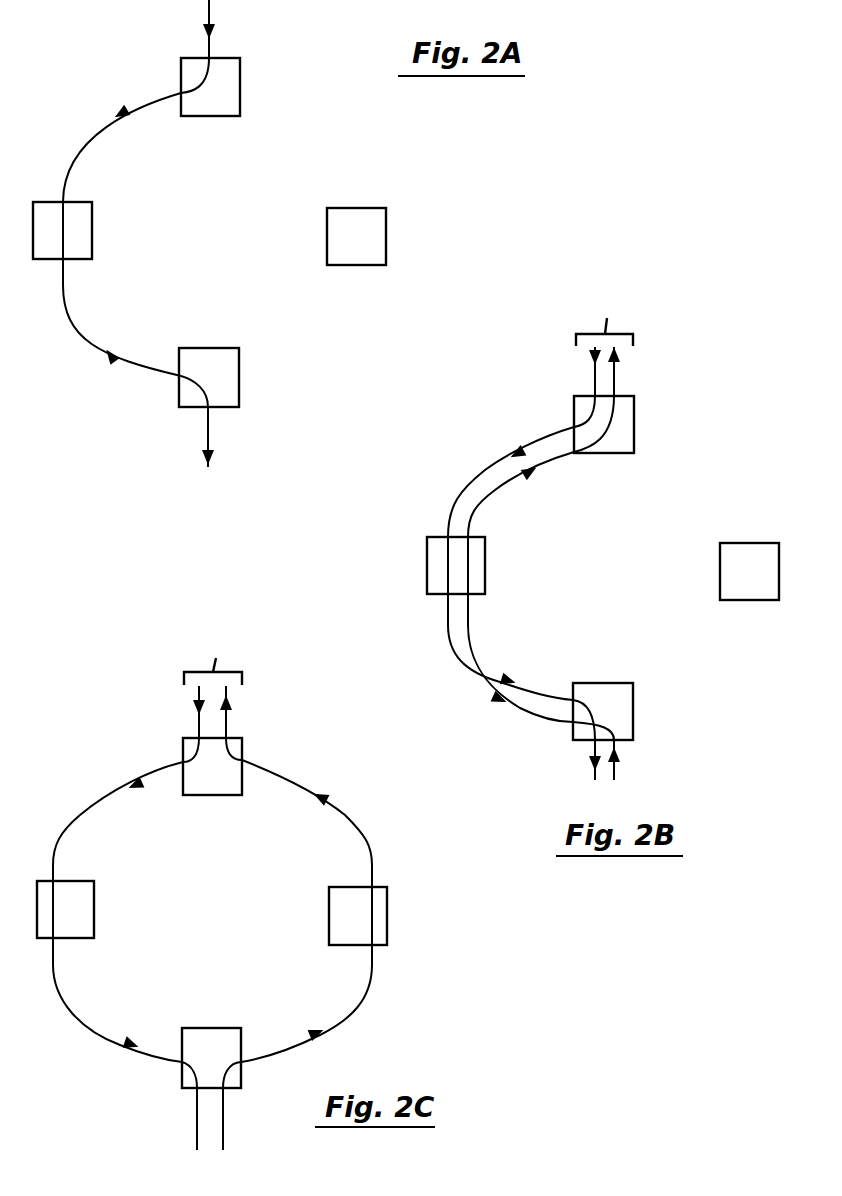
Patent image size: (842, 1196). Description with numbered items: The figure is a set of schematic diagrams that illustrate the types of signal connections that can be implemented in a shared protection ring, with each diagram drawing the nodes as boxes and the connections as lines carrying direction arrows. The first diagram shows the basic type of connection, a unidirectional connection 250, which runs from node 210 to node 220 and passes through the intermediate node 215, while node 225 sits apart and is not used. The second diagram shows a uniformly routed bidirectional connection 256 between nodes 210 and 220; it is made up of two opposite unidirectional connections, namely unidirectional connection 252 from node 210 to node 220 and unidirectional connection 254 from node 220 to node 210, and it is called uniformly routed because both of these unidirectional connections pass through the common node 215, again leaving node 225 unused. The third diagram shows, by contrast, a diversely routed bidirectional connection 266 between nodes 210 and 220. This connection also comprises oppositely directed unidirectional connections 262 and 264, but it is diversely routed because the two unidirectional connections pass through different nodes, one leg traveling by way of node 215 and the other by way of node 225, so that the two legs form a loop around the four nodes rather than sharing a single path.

In FIG. 2A, the node 210 is at (240, 85).
In FIG. 2B, the node 210 is at (633, 420).
In FIG. 2C, the node 210 is at (242, 745).
In FIG. 2A, the node 215 is at (93, 230).
In FIG. 2B, the node 215 is at (427, 566).
In FIG. 2C, the node 215 is at (94, 902).
In FIG. 2A, the node 220 is at (239, 378).
In FIG. 2B, the node 220 is at (633, 712).
In FIG. 2C, the node 220 is at (212, 1028).
In FIG. 2A, the node 225 is at (386, 236).
In FIG. 2B, the node 225 is at (720, 570).
In FIG. 2C, the node 225 is at (387, 913).
In FIG. 2A, the unidirectional connection 250 is at (136, 105).
In FIG. 2B, the unidirectional connection 252 is at (490, 465).
In FIG. 2B, the unidirectional connection 254 is at (508, 485).
In FIG. 2B, the uniformly routed bidirectional connection 256 is at (604, 318).
In FIG. 2C, the unidirectional connection 262 is at (95, 800).
In FIG. 2C, the unidirectional connection 264 is at (338, 805).
In FIG. 2C, the diversely routed bidirectional connection 266 is at (213, 658).